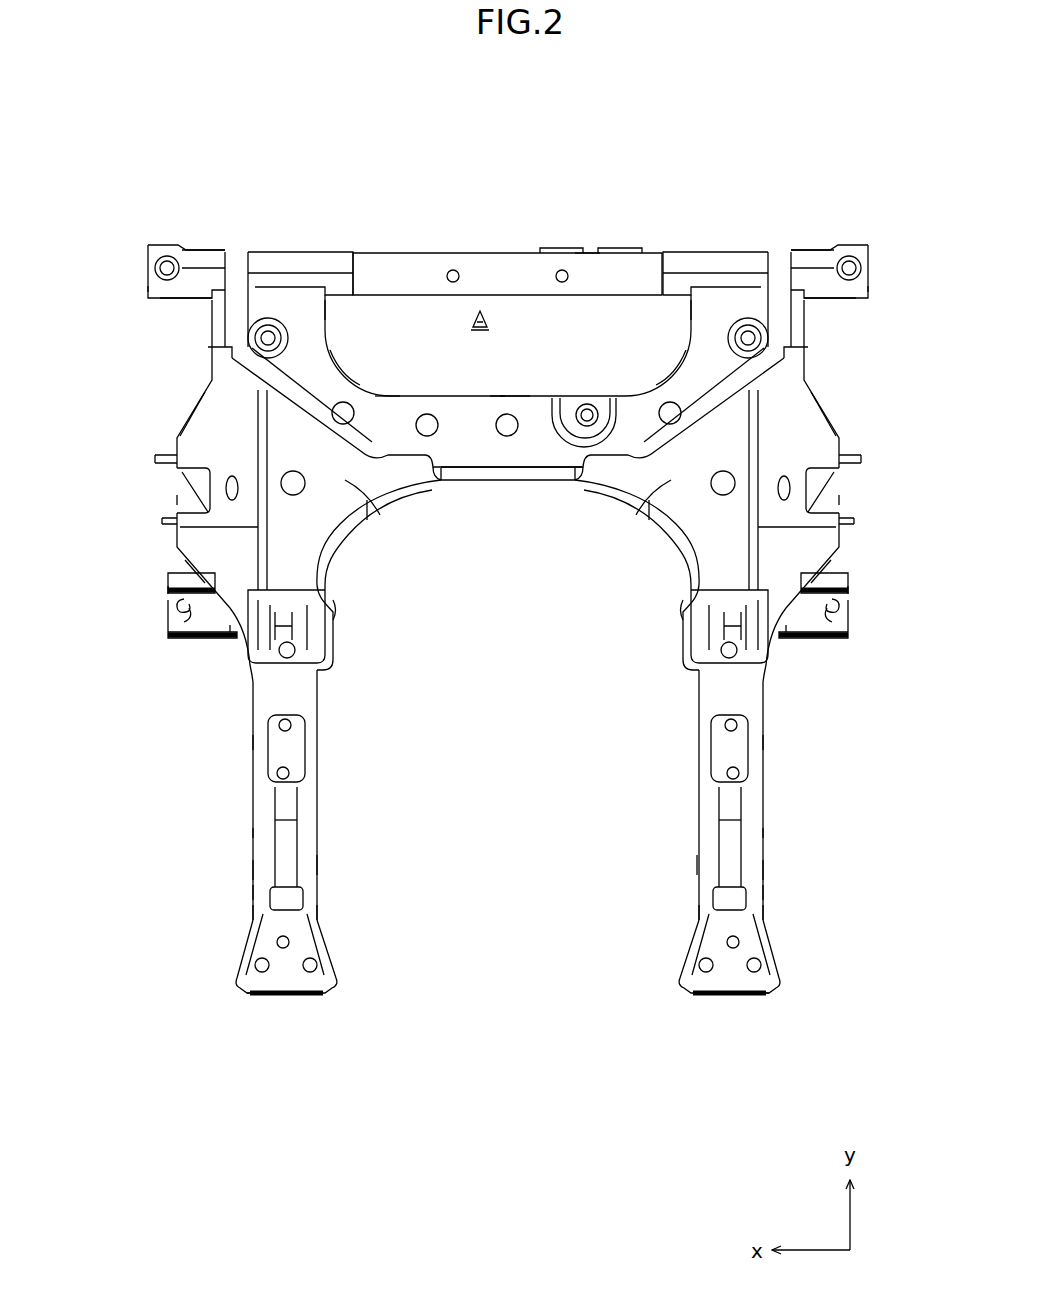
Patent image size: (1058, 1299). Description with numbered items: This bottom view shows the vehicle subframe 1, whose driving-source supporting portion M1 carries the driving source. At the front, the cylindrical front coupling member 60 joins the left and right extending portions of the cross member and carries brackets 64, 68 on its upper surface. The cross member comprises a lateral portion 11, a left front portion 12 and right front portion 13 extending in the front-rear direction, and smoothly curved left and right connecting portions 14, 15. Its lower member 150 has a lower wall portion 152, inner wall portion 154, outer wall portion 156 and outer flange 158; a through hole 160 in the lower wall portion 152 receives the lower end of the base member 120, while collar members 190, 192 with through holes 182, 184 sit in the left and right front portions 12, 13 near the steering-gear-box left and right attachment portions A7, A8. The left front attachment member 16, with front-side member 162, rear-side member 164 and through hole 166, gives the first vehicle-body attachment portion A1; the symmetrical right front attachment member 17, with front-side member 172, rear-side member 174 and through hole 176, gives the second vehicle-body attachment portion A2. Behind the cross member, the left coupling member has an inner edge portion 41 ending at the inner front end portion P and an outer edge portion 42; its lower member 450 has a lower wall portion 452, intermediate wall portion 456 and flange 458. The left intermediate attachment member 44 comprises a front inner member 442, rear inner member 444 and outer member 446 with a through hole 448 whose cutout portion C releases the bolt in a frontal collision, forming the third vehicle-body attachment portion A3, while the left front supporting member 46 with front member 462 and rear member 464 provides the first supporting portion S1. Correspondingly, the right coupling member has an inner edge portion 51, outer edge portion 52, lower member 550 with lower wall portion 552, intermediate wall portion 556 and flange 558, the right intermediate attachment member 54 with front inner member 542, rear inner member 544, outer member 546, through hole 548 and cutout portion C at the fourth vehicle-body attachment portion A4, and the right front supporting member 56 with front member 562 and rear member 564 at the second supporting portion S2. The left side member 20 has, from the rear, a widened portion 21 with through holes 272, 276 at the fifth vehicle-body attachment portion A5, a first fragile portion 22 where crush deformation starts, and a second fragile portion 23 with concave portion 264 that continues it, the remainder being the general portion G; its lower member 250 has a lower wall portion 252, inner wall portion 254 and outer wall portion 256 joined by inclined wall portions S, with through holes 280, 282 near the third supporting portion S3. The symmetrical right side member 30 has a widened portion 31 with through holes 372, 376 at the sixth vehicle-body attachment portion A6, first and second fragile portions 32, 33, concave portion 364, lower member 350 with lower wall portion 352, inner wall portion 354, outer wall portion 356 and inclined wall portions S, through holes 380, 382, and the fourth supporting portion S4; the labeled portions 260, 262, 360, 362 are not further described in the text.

The subframe 1 is at (752, 102).
The driving-source supporting portion M1 is at (588, 203).
The front coupling member 60 is at (507, 207).
The bracket 68 is at (545, 245).
The bracket 64 is at (627, 245).
The right front attachment member 17 is at (135, 243).
The front-side member 172 is at (205, 250).
The rear-side member 174 is at (185, 292).
The through hole 176 is at (158, 266).
The second vehicle-body attachment portion A2 is at (146, 290).
The left front attachment member 16 is at (870, 248).
The front-side member 162 is at (806, 255).
The rear-side member 164 is at (830, 292).
The through hole 166 is at (862, 262).
The first vehicle-body attachment portion A1 is at (873, 283).
The collar member 192 is at (260, 329).
The through hole 184 is at (272, 337).
The steering-gear-box right attachment portion A8 is at (252, 346).
The collar member 190 is at (753, 329).
The through hole 182 is at (756, 337).
The steering-gear-box left attachment portion A7 is at (790, 338).
The lateral portion 11 is at (508, 428).
The right front portion 13 is at (338, 318).
The right connecting portion 15 is at (362, 368).
The left front portion 12 is at (676, 318).
The left connecting portion 14 is at (662, 368).
The lower member 150 is at (517, 387).
The inner wall portion 154 is at (500, 390).
The lower wall portion 152 is at (386, 403).
The base member 120 is at (584, 410).
The through hole 160 is at (589, 415).
The outer wall portion 156 is at (519, 452).
The outer flange 158 is at (468, 484).
The inner front end portion P is at (449, 493).
The outer edge portion 52 is at (172, 491).
The lower member 550 is at (176, 432).
The front member 562 is at (157, 460).
The right front supporting member 56 is at (176, 486).
The second supporting portion S2 is at (176, 500).
The rear member 564 is at (165, 521).
The front inner member 542 is at (198, 583).
The outer edge portion 42 is at (834, 491).
The lower member 450 is at (840, 432).
The front member 462 is at (859, 460).
The left front supporting member 46 is at (840, 486).
The first supporting portion S1 is at (840, 502).
The rear member 464 is at (851, 521).
The front inner member 442 is at (818, 583).
The right intermediate attachment member 54 is at (491, 618).
The rear inner member 544 is at (177, 578).
The fourth vehicle-body attachment portion A4 is at (168, 590).
The cutout portion C is at (173, 612).
The through hole 548 is at (188, 624).
The outer member 546 is at (222, 640).
The left intermediate attachment member 44 is at (859, 621).
The rear inner member 444 is at (839, 578).
The third vehicle-body attachment portion A3 is at (848, 590).
The through hole 448 is at (828, 624).
The outer member 446 is at (794, 640).
The inner edge portion 51 is at (350, 573).
The lower wall portion 552 is at (332, 476).
The intermediate wall portion 556 is at (345, 505).
The flange 558 is at (343, 608).
The inner edge portion 41 is at (661, 573).
The lower wall portion 452 is at (684, 476).
The intermediate wall portion 456 is at (671, 505).
The flange 458 is at (673, 608).
The right side member 30 is at (480, 875).
The lower member 350 is at (340, 752).
The through hole 382 is at (292, 725).
The through hole 380 is at (278, 773).
The lower wall portion 352 is at (293, 807).
The inclined wall portion S is at (267, 827).
The fourth supporting portion S4 is at (247, 742).
The general portion G is at (240, 833).
The outer wall portion 356 is at (255, 868).
The inner wall portion 354 is at (318, 865).
The second fragile portion 33 is at (313, 887).
The concave portion 364 is at (253, 890).
The left leg lower wall 362 is at (255, 920).
The first fragile portion 32 is at (304, 987).
The left foot upper edge 360 is at (318, 920).
The through hole 376 is at (257, 965).
The through hole 372 is at (310, 968).
The widened portion 31 is at (295, 1000).
The sixth vehicle-body attachment portion A6 is at (263, 1000).
The left side member 20 is at (732, 874).
The lower member 250 is at (675, 752).
The through hole 282 is at (725, 725).
The through hole 280 is at (738, 773).
The lower wall portion 252 is at (722, 807).
The third supporting portion S3 is at (768, 742).
The outer wall portion 256 is at (762, 868).
The inner wall portion 254 is at (700, 866).
The second fragile portion 23 is at (705, 890).
The concave portion 264 is at (762, 890).
The right leg lower wall 262 is at (762, 920).
The first fragile portion 22 is at (714, 985).
The right foot upper edge 260 is at (698, 920).
The through hole 276 is at (760, 965).
The through hole 272 is at (706, 968).
The widened portion 21 is at (720, 1000).
The fifth vehicle-body attachment portion A5 is at (752, 1000).